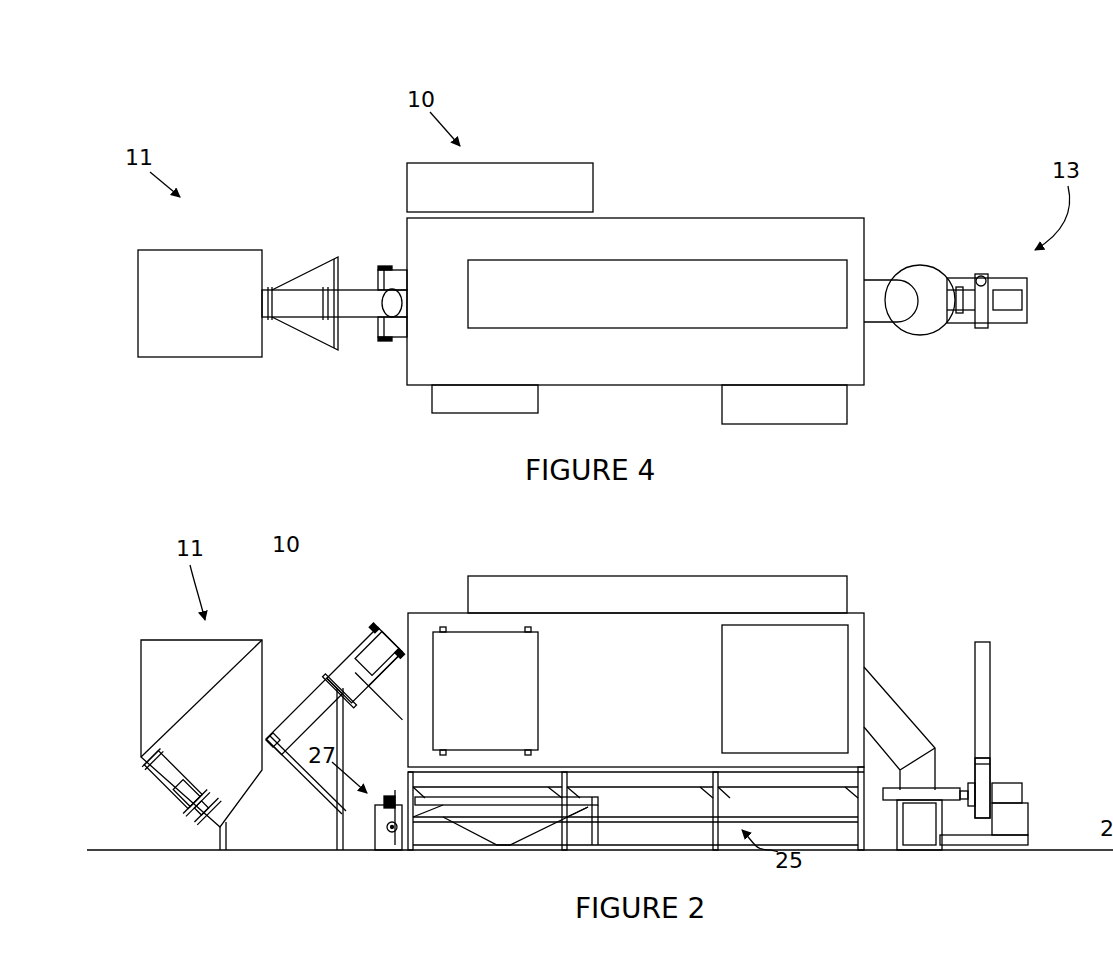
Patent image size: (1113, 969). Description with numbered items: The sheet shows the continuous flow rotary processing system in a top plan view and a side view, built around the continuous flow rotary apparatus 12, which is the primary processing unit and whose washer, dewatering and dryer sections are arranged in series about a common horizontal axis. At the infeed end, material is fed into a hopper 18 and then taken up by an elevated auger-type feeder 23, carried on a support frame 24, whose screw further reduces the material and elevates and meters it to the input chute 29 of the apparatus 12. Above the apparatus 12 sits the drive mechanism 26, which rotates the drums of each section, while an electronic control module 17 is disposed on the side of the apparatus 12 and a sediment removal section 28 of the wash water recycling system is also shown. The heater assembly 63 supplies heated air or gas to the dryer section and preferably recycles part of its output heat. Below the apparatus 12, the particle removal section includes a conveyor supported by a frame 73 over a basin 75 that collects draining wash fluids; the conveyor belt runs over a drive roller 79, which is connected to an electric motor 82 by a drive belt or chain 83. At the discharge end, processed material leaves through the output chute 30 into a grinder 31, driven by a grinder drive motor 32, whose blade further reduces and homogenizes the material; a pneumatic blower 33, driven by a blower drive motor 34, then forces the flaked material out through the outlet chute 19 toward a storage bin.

In FIG. 4, the continuous flow rotary apparatus 12 is at (727, 232).
In FIG. 2, the continuous flow rotary apparatus 12 is at (446, 624).
In FIG. 4, the electronic control module 17 is at (463, 402).
In FIG. 2, the electronic control module 17 is at (530, 696).
In FIG. 4, the hopper 18 is at (207, 272).
In FIG. 2, the hopper 18 is at (165, 653).
In FIG. 4, the outlet chute 19 is at (982, 276).
In FIG. 2, the outlet chute 19 is at (982, 644).
In FIG. 4, the auger-type feeder 23 is at (359, 296).
In FIG. 2, the auger-type feeder 23 is at (317, 712).
In FIG. 4, the support frame 24 is at (308, 337).
In FIG. 2, the support frame 24 is at (307, 772).
In FIG. 4, the drive mechanism 26 is at (520, 315).
In FIG. 2, the drive mechanism 26 is at (683, 596).
In FIG. 4, the sediment removal section 28 is at (598, 180).
In FIG. 4, the input chute 29 is at (403, 305).
In FIG. 2, the input chute 29 is at (394, 686).
In FIG. 4, the output chute 30 is at (878, 310).
In FIG. 2, the output chute 30 is at (883, 702).
In FIG. 4, the grinder 31 is at (920, 268).
In FIG. 2, the grinder 31 is at (944, 790).
In FIG. 2, the grinder drive motor 32 is at (920, 836).
In FIG. 4, the pneumatic blower 33 is at (984, 326).
In FIG. 2, the pneumatic blower 33 is at (990, 772).
In FIG. 4, the blower drive motor 34 is at (1024, 300).
In FIG. 2, the blower drive motor 34 is at (1023, 796).
In FIG. 4, the heater assembly 63 is at (838, 412).
In FIG. 2, the heater assembly 63 is at (738, 692).
In FIG. 2, the frame 73 is at (600, 832).
In FIG. 2, the basin 75 is at (457, 840).
In FIG. 2, the drive roller 79 is at (388, 796).
In FIG. 2, the electric motor 82 is at (386, 833).
In FIG. 2, the drive belt or chain 83 is at (386, 821).